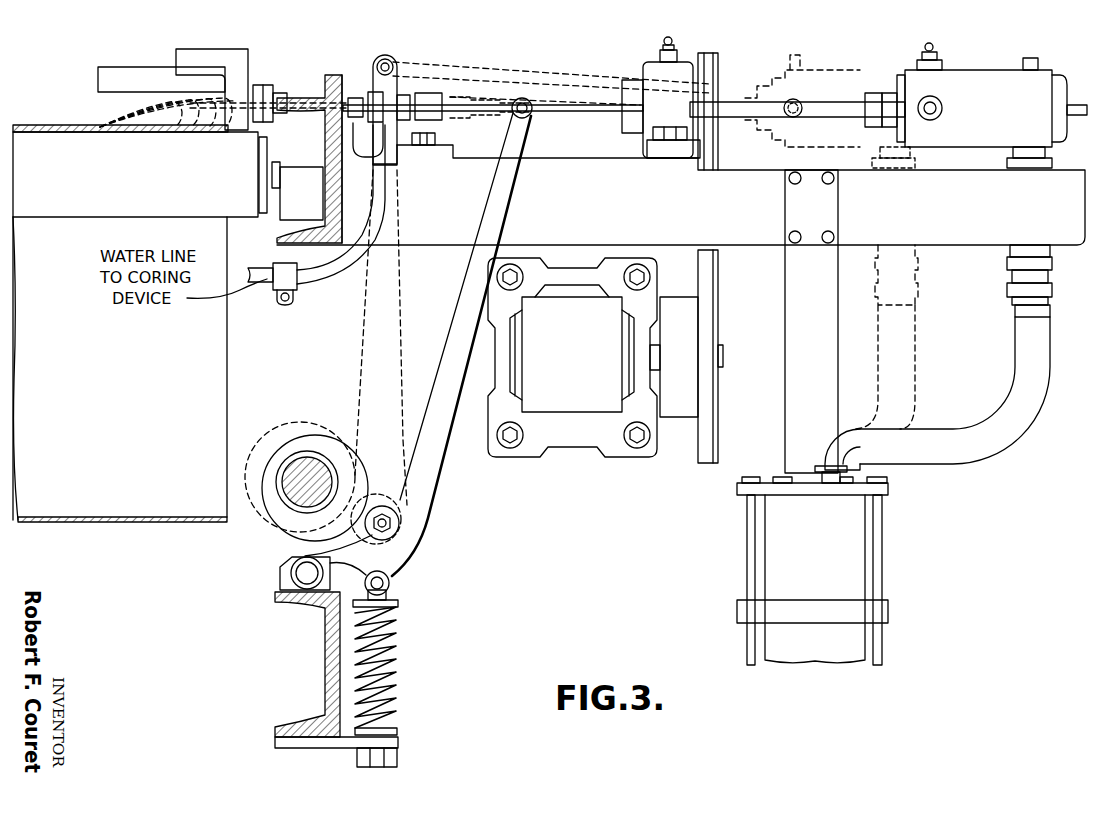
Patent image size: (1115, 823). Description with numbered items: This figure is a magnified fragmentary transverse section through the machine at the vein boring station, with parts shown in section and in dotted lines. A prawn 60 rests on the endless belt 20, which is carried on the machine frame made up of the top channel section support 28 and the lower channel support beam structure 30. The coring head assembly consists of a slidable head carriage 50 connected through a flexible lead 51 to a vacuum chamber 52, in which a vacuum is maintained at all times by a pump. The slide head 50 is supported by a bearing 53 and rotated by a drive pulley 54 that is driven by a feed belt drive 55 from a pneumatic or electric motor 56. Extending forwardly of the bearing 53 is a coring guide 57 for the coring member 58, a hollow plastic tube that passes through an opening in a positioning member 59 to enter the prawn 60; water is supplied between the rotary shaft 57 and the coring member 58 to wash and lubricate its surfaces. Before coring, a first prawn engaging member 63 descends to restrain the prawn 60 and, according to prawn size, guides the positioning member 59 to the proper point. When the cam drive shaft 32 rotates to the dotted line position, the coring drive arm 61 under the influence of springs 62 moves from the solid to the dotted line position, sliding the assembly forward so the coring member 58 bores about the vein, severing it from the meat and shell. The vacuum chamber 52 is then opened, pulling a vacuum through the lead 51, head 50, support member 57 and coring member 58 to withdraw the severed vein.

The endless belt 20 is at (72, 133).
The top channel section support 28 is at (333, 283).
The lower channel support beam structure 30 is at (332, 670).
The cam drive shaft 32 is at (300, 494).
The slidable head carriage 50 is at (973, 78).
The flexible lead 51 is at (1001, 408).
The vacuum chamber 52 is at (840, 530).
The bearing 53 is at (660, 76).
The drive pulley 54 is at (714, 70).
The feed belt drive 55 is at (716, 266).
The motor 56 is at (586, 364).
The coring guide 57 is at (495, 120).
The coring member 58 is at (449, 100).
The positioning member 59 is at (270, 115).
The prawn 60 is at (170, 120).
The coring drive arm 61 is at (462, 272).
The springs 62 is at (400, 640).
The first prawn engaging member 63 is at (143, 72).